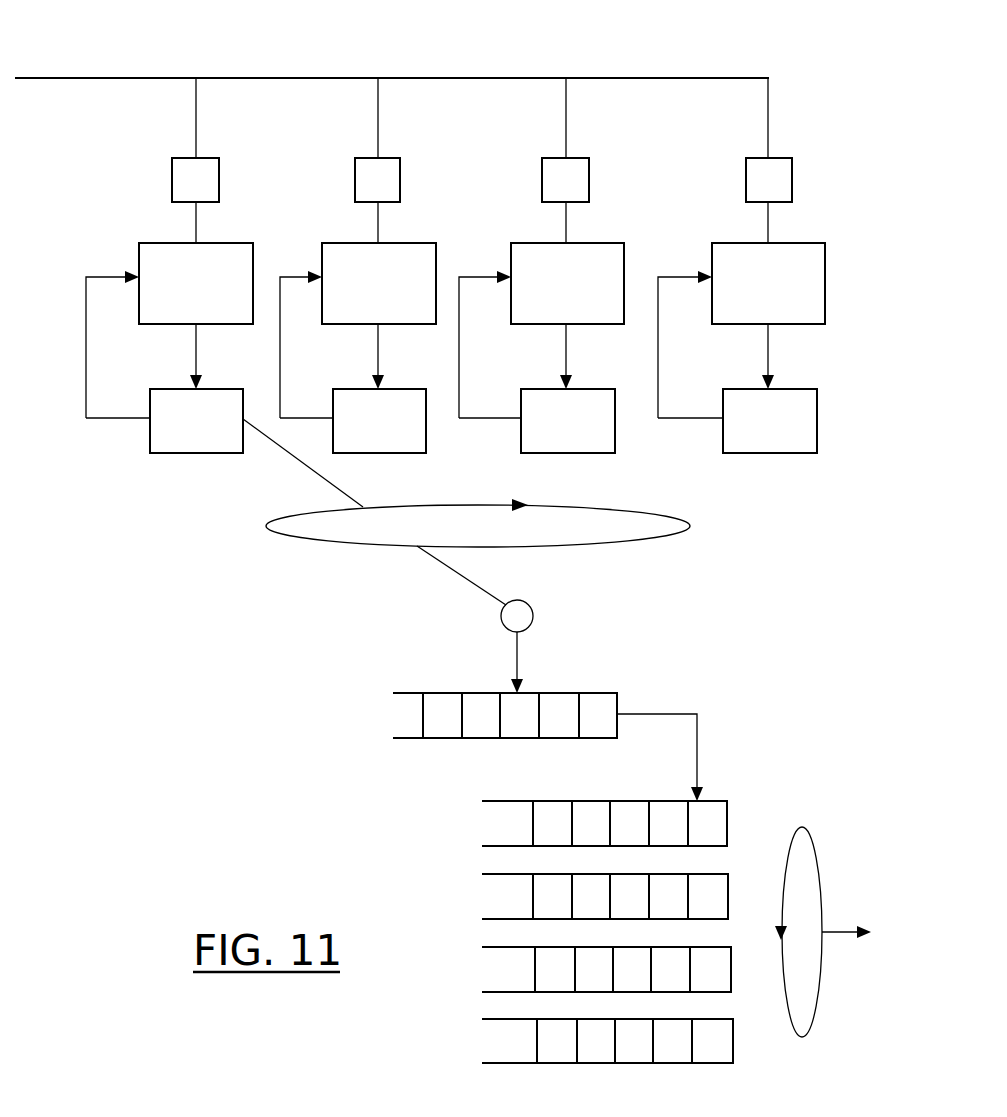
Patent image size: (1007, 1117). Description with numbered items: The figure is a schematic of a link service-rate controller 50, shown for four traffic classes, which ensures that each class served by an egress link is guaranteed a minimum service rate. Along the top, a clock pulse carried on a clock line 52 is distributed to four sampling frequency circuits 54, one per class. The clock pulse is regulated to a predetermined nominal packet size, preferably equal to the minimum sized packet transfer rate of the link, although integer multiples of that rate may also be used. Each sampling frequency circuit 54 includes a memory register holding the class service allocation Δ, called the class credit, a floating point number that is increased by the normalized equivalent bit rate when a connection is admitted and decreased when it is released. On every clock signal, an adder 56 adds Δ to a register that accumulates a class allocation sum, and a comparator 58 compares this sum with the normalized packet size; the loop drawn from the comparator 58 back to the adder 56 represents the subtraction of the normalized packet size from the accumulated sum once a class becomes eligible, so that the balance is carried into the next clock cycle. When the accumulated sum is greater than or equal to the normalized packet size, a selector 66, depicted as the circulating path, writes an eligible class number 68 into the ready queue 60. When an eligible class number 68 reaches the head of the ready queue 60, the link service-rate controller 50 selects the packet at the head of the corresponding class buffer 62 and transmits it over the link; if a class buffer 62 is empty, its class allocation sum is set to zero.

The link service-rate controller 50 is at (776, 568).
The clock line 52 is at (261, 78).
The sampling frequency circuit 54 is at (400, 158).
The adder 56 is at (239, 243).
The comparator 58 is at (426, 437).
The ready queue 60 is at (531, 693).
The class buffer 62 is at (727, 801).
The selector 66 is at (286, 543).
The eligible class number 68 is at (597, 712).